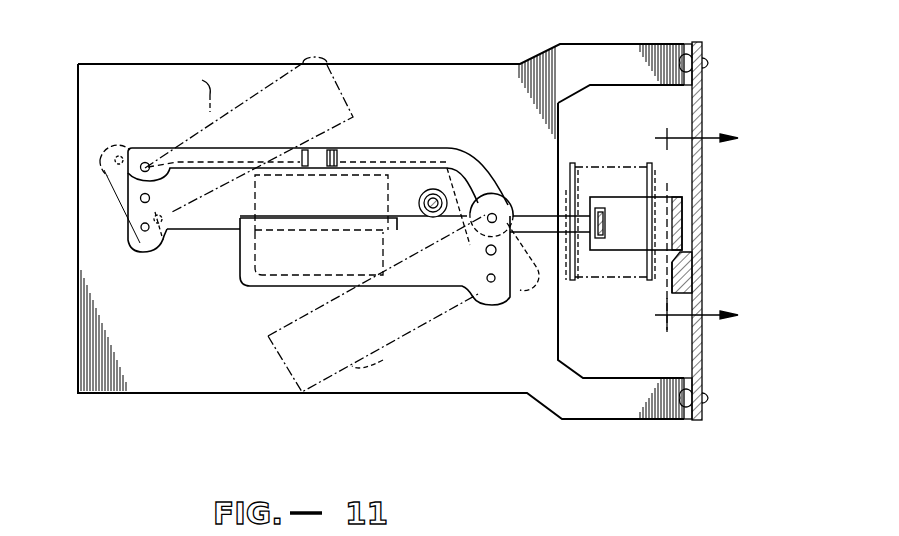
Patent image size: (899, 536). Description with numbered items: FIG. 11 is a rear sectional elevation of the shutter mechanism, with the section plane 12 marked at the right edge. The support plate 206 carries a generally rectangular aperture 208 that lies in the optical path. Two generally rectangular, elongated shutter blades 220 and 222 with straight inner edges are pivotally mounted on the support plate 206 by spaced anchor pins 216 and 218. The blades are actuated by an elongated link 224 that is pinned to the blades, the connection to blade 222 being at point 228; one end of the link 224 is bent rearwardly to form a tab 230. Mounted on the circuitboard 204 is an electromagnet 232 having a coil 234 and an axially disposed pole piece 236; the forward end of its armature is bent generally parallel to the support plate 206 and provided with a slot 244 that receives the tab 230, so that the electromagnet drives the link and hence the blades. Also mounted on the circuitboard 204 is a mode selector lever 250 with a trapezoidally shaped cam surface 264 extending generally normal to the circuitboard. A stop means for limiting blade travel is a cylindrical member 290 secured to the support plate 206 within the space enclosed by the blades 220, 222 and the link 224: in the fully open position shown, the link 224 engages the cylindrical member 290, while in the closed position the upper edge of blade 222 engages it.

The circuitboard 204 is at (706, 84).
The support plate 206 is at (186, 356).
The aperture 208 is at (272, 283).
The anchor pin 216 is at (140, 200).
The anchor pin 218 is at (486, 251).
The shutter blade 220 is at (224, 224).
The shutter blade 222 is at (432, 247).
The link 224 is at (372, 148).
The pin point 228 is at (494, 212).
The tab 230 is at (604, 228).
The electromagnet 232 is at (577, 154).
The coil 234 is at (593, 173).
The pole piece 236 is at (146, 162).
The slot 244 is at (605, 212).
The mode selector lever 250 is at (692, 252).
The cam surface 264 is at (686, 276).
The cylindrical member 290 is at (437, 188).
The section line 12- 12 is at (715, 228).